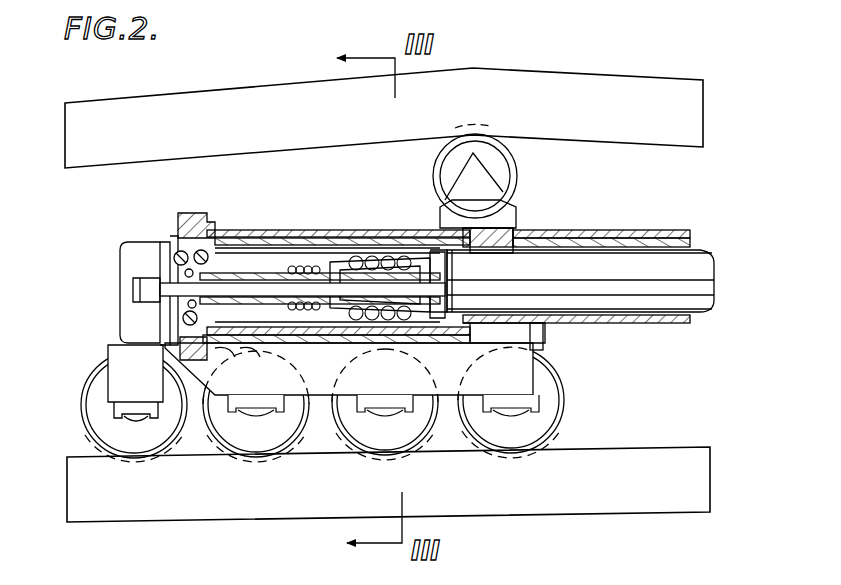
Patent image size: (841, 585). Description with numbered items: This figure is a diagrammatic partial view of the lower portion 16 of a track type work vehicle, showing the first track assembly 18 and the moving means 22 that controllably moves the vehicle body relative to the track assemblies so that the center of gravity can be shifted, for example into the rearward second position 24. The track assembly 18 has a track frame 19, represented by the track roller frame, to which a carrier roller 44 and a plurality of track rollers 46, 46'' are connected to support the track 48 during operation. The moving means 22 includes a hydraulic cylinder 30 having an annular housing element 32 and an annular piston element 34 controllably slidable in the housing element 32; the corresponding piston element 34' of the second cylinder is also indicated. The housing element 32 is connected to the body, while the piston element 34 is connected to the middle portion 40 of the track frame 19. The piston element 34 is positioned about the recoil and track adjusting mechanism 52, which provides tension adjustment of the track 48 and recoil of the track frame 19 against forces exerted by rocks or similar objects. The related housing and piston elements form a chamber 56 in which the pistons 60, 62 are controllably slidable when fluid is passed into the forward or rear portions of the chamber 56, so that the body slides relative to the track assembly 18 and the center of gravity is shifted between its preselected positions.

The lower portion 16 is at (95, 215).
The first track assembly 18 is at (612, 36).
The track frame 19 is at (588, 378).
The moving means 22 is at (256, 212).
The second position 24 is at (96, 330).
The first hydraulic cylinder 30 is at (535, 215).
The housing element 32 is at (318, 210).
The piston element 34 is at (352, 374).
The piston element 34' is at (576, 337).
The middle portion 40 is at (380, 200).
The carrier roller 44 is at (488, 152).
The track rollers 46 is at (383, 424).
The wheel 46'' is at (134, 427).
The track 48 is at (624, 131).
The recoil and track adjusting mechanism 52 is at (519, 278).
The chamber 56 is at (288, 350).
The piston 60 is at (446, 327).
The piston 62 is at (415, 333).